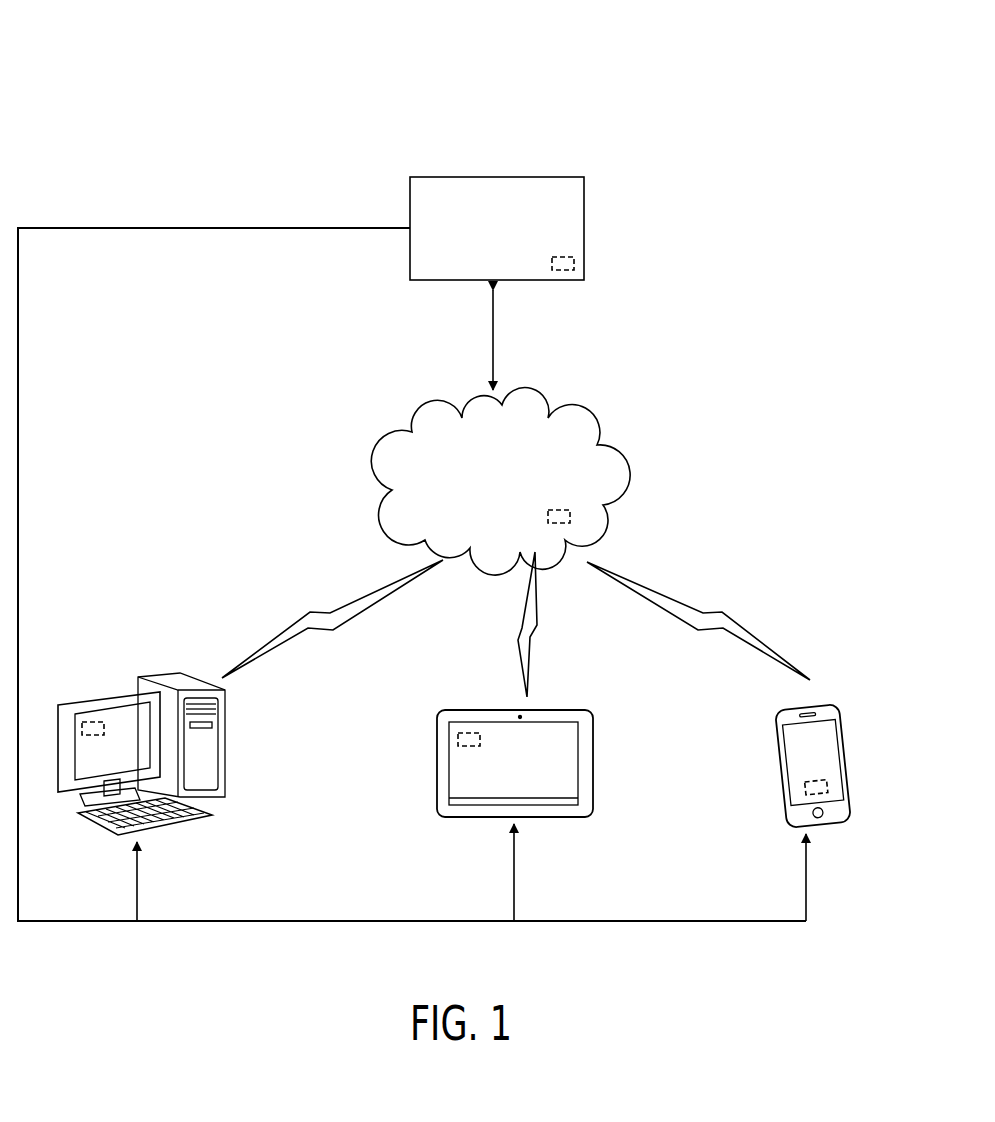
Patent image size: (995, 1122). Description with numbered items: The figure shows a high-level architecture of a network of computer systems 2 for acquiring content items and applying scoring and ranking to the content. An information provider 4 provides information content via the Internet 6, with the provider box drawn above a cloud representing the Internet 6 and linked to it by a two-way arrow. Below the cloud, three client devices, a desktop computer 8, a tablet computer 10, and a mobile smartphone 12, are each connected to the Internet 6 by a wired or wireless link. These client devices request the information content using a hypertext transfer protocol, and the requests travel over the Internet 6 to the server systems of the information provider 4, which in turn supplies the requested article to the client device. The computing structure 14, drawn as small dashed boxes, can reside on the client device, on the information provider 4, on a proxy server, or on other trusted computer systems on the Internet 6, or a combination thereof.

The network of computer systems 2 is at (125, 82).
The information provider 4 is at (584, 227).
The Internet 6 is at (609, 480).
The desktop computer 8 is at (225, 740).
The tablet computer 10 is at (593, 740).
The mobile smartphone 12 is at (850, 738).
The computing structure 14 is at (578, 263).